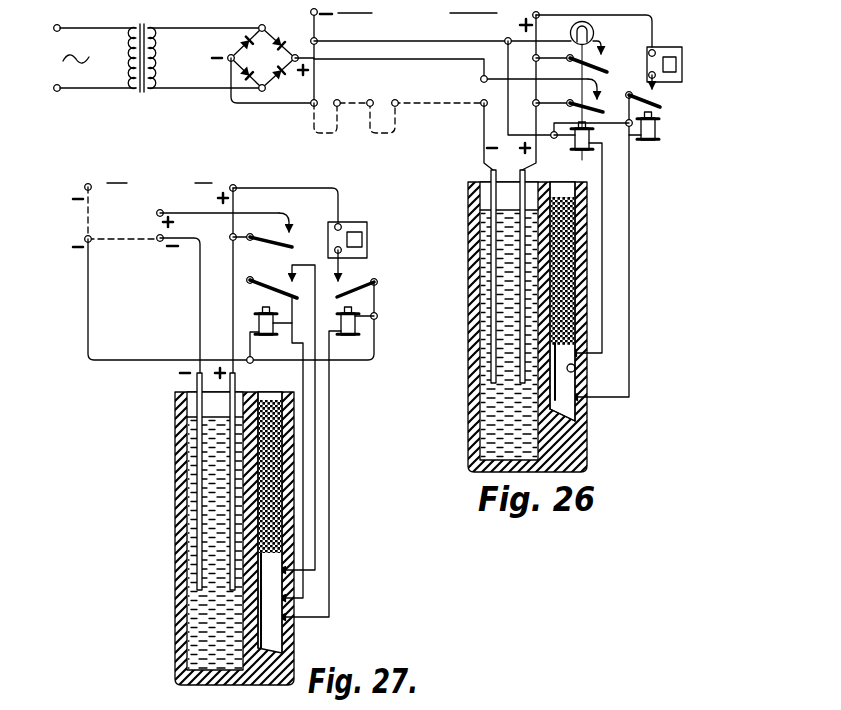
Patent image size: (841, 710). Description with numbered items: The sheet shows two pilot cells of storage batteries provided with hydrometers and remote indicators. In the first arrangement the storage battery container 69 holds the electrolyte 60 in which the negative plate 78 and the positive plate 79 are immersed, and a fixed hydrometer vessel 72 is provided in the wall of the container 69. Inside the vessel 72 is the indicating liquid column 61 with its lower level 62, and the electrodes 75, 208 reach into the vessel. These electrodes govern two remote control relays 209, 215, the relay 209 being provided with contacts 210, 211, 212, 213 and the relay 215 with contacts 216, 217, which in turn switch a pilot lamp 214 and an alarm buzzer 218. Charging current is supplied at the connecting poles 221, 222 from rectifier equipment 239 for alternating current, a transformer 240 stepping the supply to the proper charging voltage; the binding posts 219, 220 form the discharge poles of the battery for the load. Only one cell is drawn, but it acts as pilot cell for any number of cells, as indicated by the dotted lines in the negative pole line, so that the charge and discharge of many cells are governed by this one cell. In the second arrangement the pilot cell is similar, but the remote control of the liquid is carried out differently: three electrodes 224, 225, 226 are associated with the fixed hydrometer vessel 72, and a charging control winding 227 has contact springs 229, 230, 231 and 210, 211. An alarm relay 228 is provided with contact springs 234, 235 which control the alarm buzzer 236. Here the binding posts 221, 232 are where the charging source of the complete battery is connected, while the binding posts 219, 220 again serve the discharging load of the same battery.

In FIG. 26, the rectifier equipment 239 is at (233, 42).
In FIG. 26, the transformer 240 is at (142, 90).
In FIG. 26, the binding post 232 is at (313, 106).
In FIG. 27, the binding post 232 is at (223, 273).
In FIG. 26, the binding post 220 is at (398, 11).
In FIG. 27, the binding post 220 is at (142, 182).
In FIG. 26, the connecting pole 221 is at (451, 74).
In FIG. 27, the connecting pole 221 is at (156, 214).
In FIG. 26, the connecting pole 222 is at (465, 135).
In FIG. 27, the connecting pole 222 is at (160, 243).
In FIG. 26, the binding post 219 is at (586, 85).
In FIG. 27, the binding post 219 is at (278, 269).
In FIG. 26, the pilot lamp 214 is at (584, 21).
In FIG. 26, the contact 213 is at (605, 52).
In FIG. 26, the contact 212 is at (572, 62).
In FIG. 26, the contact 211 is at (585, 90).
In FIG. 27, the contact 211 is at (304, 200).
In FIG. 26, the contact 210 is at (571, 106).
In FIG. 27, the contact 210 is at (261, 231).
In FIG. 26, the alarm buzzer 218 is at (656, 50).
In FIG. 26, the contact 217 is at (674, 89).
In FIG. 26, the contact 216 is at (605, 104).
In FIG. 26, the remote control relay 209 is at (566, 150).
In FIG. 26, the remote control relay 215 is at (662, 138).
In FIG. 26, the storage battery container 69 is at (470, 214).
In FIG. 27, the storage battery container 69 is at (177, 422).
In FIG. 26, the electrolyte 60 is at (505, 343).
In FIG. 27, the electrolyte 60 is at (210, 533).
In FIG. 26, the fixed hydrometer vessel 72 is at (587, 268).
In FIG. 27, the fixed hydrometer vessel 72 is at (295, 472).
In FIG. 26, the indicating liquid column 61 is at (577, 299).
In FIG. 27, the indicating liquid column 61 is at (283, 492).
In FIG. 26, the lower level 62 is at (587, 333).
In FIG. 27, the lower level 62 is at (287, 538).
In FIG. 26, the electrode 75 is at (577, 370).
In FIG. 26, the electrode 208 is at (574, 415).
In FIG. 26, the negative plate 78 is at (492, 250).
In FIG. 27, the negative plate 78 is at (197, 457).
In FIG. 26, the positive plate 79 is at (520, 303).
In FIG. 27, the positive plate 79 is at (228, 488).
In FIG. 27, the alarm buzzer 236 is at (365, 257).
In FIG. 27, the contact spring 235 is at (364, 284).
In FIG. 27, the contact spring 231 is at (291, 257).
In FIG. 27, the contact spring 230 is at (275, 427).
In FIG. 27, the contact spring 229 is at (293, 293).
In FIG. 27, the contact spring 234 is at (372, 299).
In FIG. 27, the charging control winding 227 is at (268, 344).
In FIG. 27, the alarm relay 228 is at (362, 325).
In FIG. 27, the electrode 224 is at (297, 588).
In FIG. 27, the electrode 225 is at (299, 617).
In FIG. 27, the electrode 226 is at (298, 644).